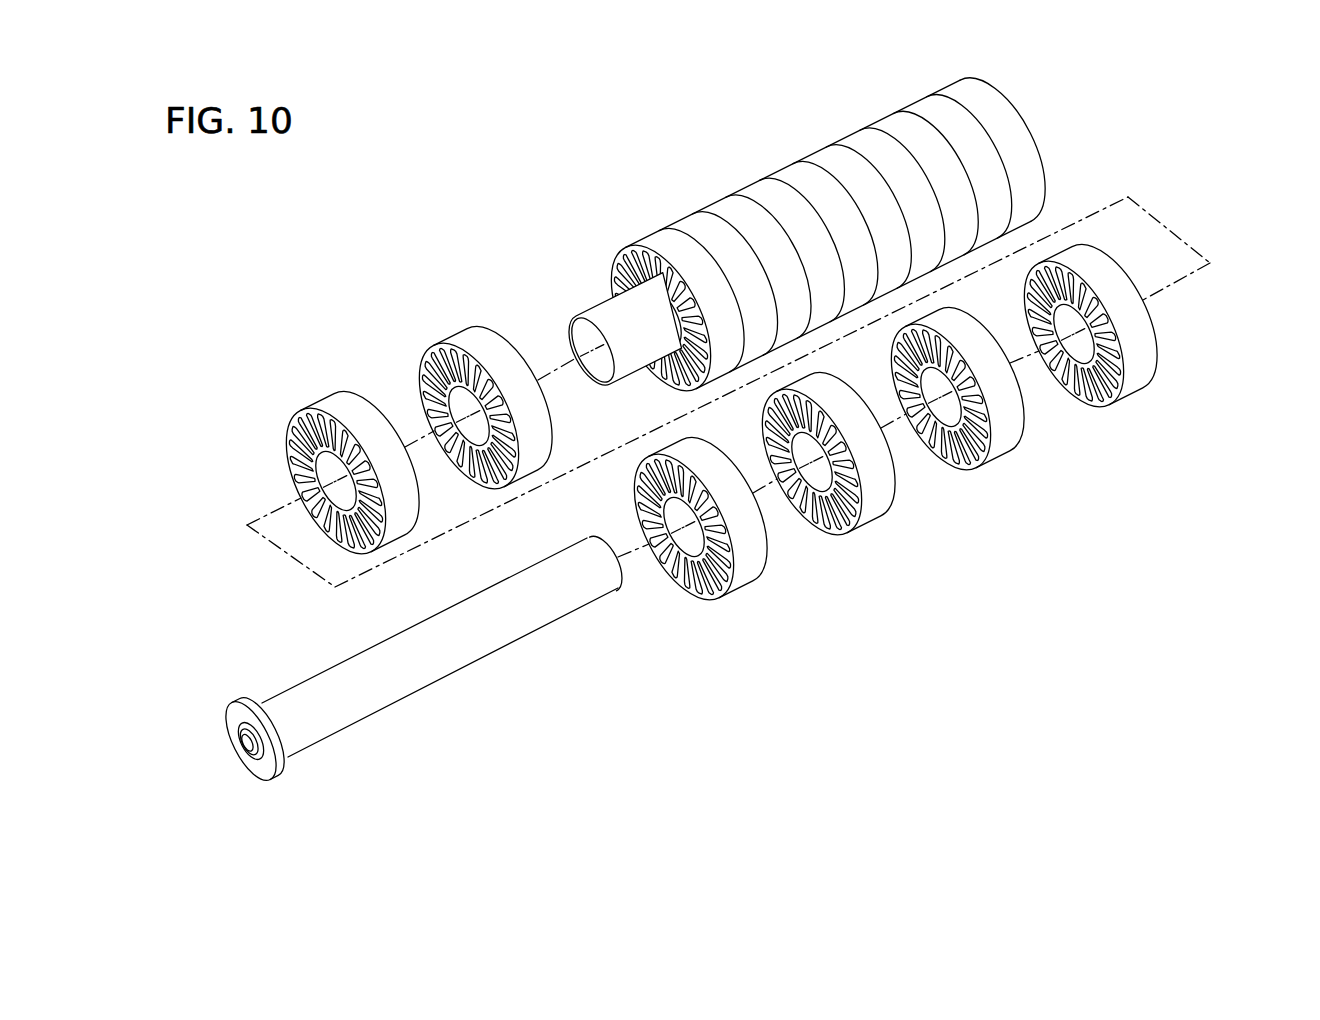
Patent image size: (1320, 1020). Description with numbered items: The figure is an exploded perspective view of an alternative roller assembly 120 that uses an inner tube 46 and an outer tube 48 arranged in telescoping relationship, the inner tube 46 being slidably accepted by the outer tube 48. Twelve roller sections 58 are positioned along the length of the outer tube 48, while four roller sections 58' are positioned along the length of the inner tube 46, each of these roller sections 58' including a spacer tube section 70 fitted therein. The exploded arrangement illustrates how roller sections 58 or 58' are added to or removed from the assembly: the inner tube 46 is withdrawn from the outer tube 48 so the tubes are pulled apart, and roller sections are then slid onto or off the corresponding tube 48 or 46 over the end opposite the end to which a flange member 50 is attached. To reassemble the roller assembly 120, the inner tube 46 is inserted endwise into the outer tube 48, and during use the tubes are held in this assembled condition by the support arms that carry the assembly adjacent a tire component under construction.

The roller assembly 120 is at (516, 169).
The roller section 58 is at (756, 303).
The roller section 58' is at (918, 449).
The spacer tube section 70 is at (690, 548).
The outer tube 48 is at (607, 315).
The inner tube 46 is at (448, 652).
The flange member 50 is at (278, 776).